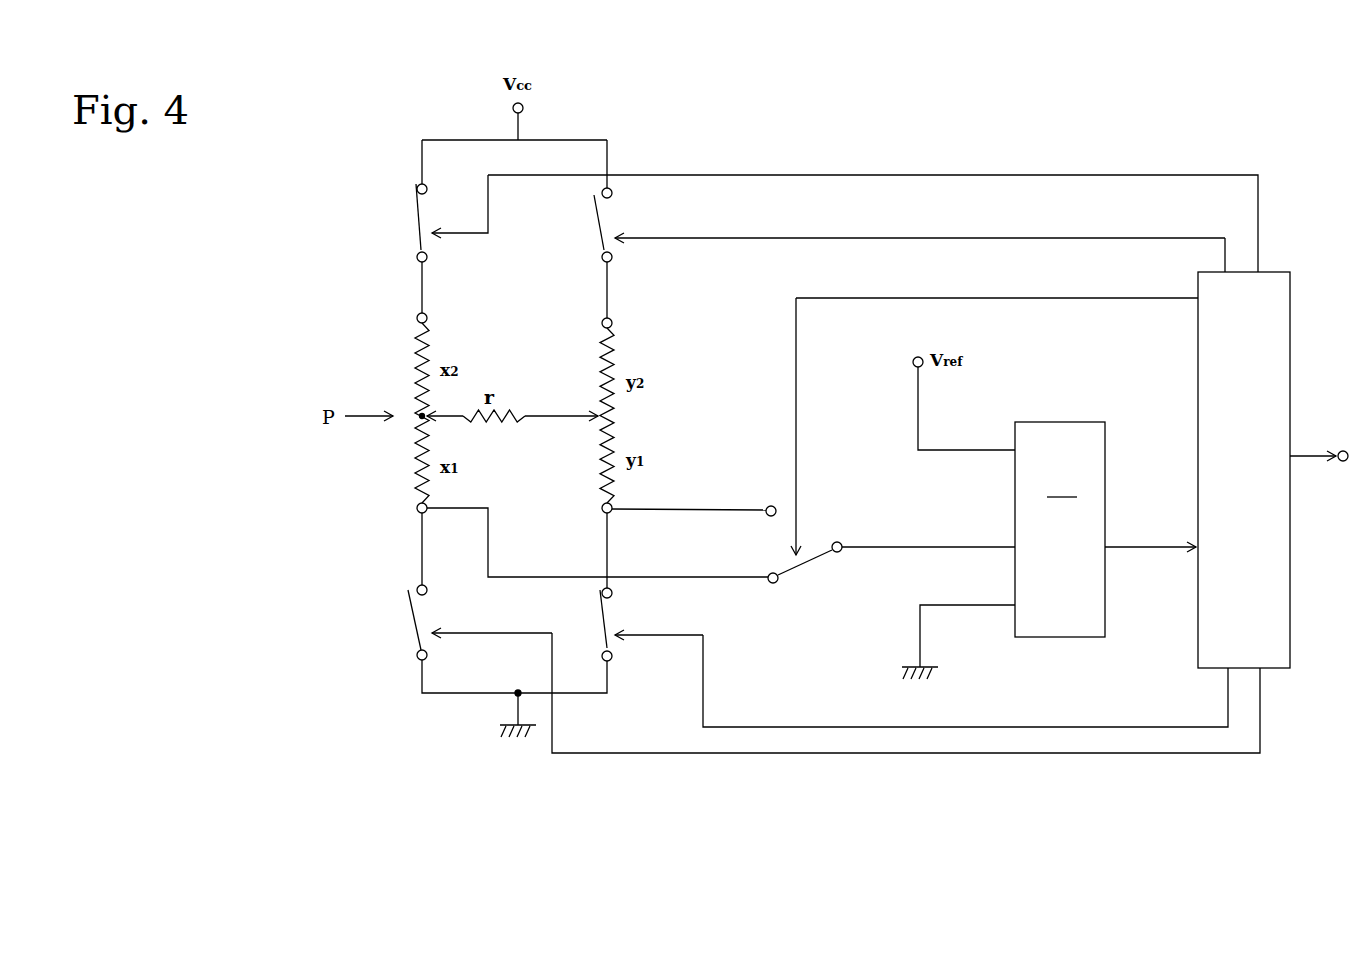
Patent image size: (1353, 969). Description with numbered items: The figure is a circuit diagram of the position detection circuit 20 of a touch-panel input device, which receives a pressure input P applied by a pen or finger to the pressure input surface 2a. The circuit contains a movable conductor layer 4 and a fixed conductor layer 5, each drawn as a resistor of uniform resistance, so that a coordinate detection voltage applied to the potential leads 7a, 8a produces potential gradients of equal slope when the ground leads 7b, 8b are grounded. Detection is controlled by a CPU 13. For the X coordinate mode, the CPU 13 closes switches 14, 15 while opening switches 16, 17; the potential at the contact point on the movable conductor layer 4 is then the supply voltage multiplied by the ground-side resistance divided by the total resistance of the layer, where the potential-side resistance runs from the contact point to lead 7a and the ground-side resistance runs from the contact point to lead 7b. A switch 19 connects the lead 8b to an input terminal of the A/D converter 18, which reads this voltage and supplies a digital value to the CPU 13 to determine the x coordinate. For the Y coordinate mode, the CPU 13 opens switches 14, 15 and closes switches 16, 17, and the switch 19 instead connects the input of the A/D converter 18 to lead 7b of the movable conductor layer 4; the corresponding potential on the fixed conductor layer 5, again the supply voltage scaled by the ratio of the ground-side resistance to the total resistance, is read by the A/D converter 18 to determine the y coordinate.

The position detection circuit 20 is at (1080, 142).
The switch 14 is at (418, 223).
The switch 16 is at (600, 217).
The potential lead 7a is at (416, 318).
The potential lead 8a is at (609, 323).
The movable conductor layer 4 is at (415, 362).
The fixed conductor layer 5 is at (602, 350).
The pressure input surface 2a is at (414, 432).
The ground lead 7b is at (418, 508).
The ground lead 8b is at (610, 513).
The switch 15 is at (412, 618).
The switch 17 is at (605, 613).
The switch 19 is at (812, 562).
The A/D converter 18 is at (1060, 529).
The CPU 13 is at (1244, 470).